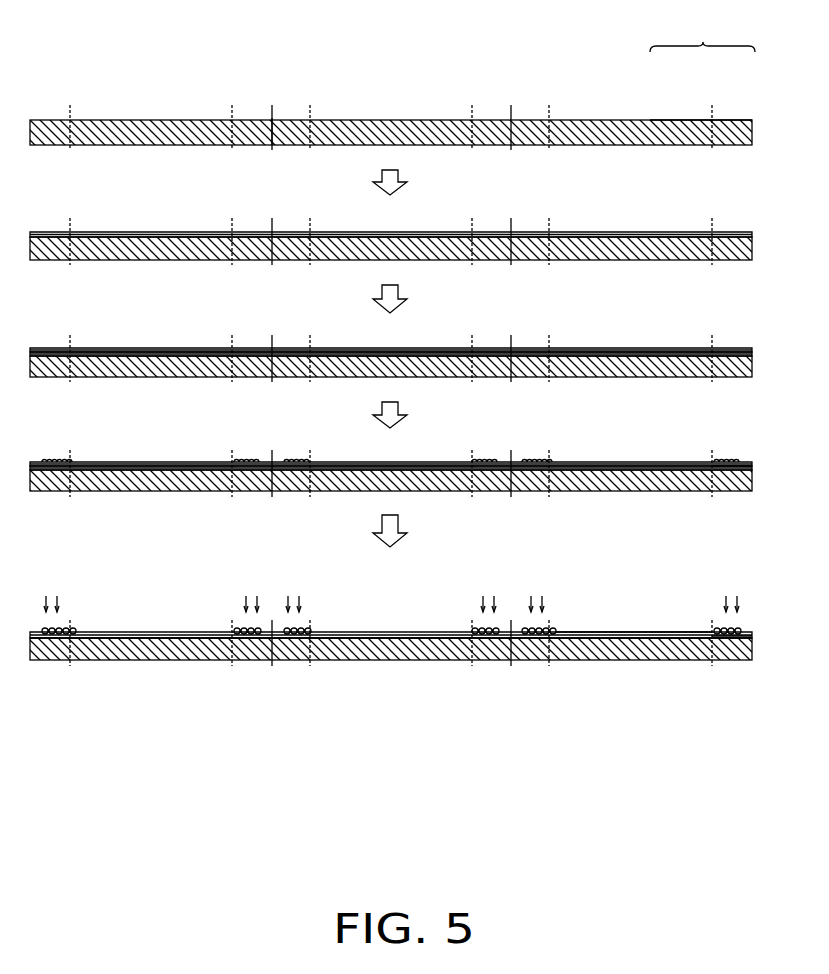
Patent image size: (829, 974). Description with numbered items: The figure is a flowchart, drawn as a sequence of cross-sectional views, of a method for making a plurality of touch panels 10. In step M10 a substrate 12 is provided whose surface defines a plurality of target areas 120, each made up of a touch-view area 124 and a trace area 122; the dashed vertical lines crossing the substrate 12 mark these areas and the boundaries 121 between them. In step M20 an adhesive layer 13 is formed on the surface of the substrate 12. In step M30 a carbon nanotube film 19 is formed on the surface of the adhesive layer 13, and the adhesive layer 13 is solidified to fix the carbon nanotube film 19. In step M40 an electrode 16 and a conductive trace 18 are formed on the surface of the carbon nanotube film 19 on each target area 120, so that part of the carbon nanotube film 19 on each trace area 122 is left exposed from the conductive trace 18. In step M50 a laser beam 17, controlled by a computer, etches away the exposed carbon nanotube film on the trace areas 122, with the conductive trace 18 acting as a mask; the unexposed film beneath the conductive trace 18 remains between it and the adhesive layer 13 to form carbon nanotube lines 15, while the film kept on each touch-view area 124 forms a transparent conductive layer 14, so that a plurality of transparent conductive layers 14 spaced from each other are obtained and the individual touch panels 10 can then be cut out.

The touch panel 10 is at (391, 586).
The substrate 12 is at (752, 128).
The target area 120 is at (702, 35).
The cutting line 121 is at (273, 118).
The trace area 122 is at (728, 120).
The touch-view area 124 is at (660, 120).
The adhesive layer 13 is at (752, 234).
The transparent conductive layer 14 is at (678, 632).
The carbon nanotube line 15 is at (711, 634).
The electrode 16 is at (556, 462).
The laser beam 17 is at (546, 605).
The conductive trace 18 is at (736, 462).
The carbon nanotube film 19 is at (680, 348).
The step of providing a substrate M10 is at (124, 88).
The step of forming an adhesive layer M20 is at (128, 208).
The step of forming a carbon nanotube film M30 is at (128, 320).
The step of forming an electrode and a conductive trace M40 is at (128, 438).
The step of removing the exposed carbon nanotube film M50 is at (138, 558).